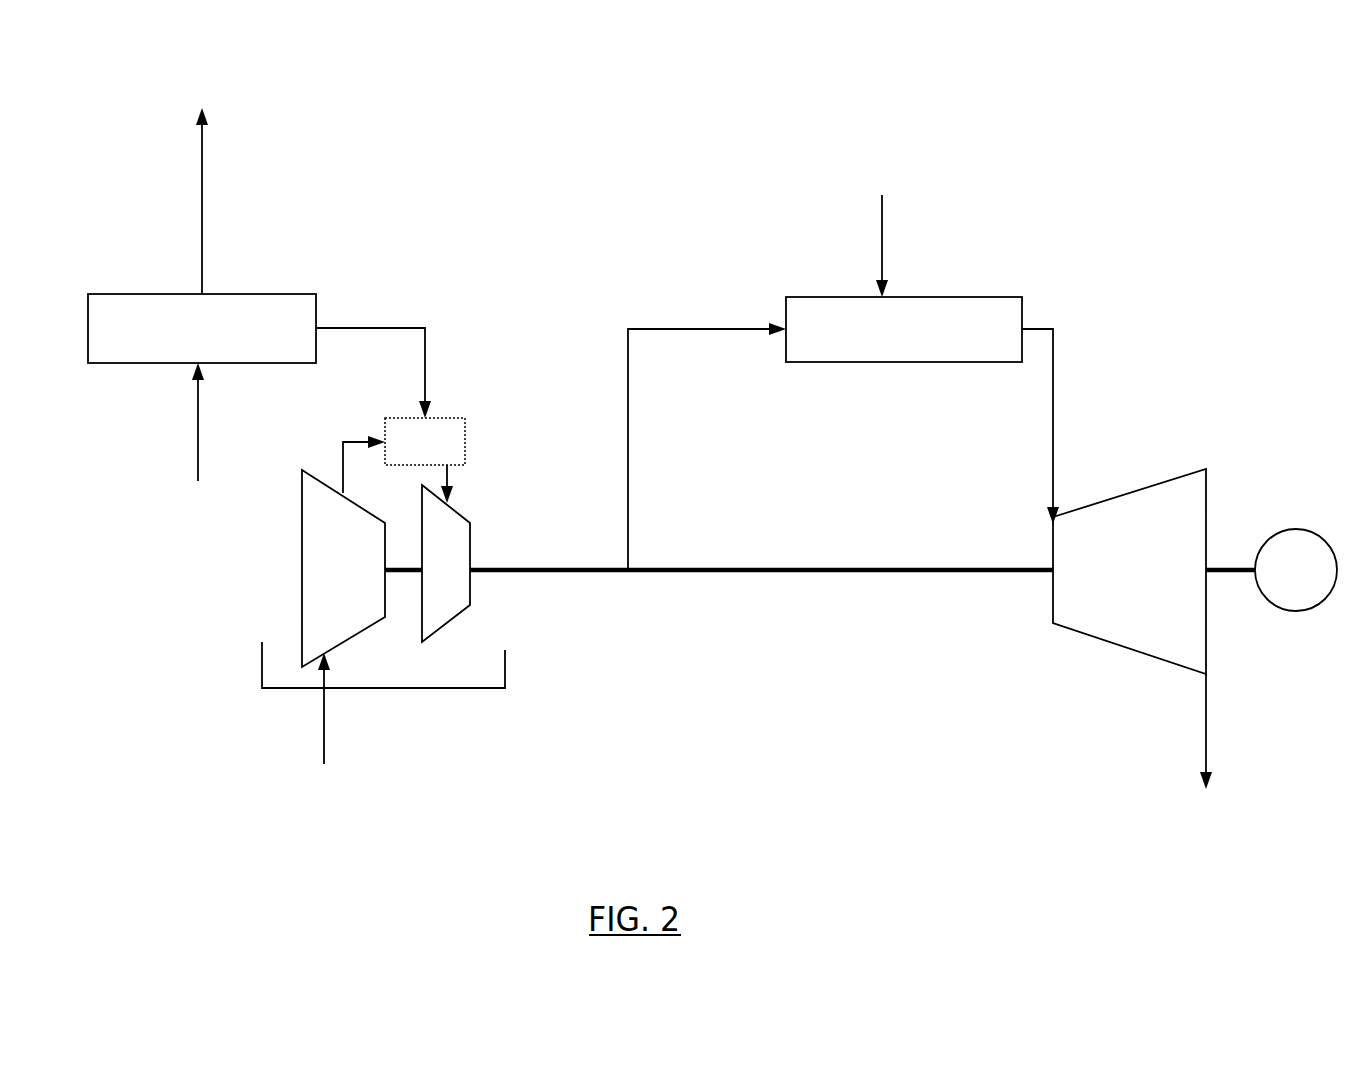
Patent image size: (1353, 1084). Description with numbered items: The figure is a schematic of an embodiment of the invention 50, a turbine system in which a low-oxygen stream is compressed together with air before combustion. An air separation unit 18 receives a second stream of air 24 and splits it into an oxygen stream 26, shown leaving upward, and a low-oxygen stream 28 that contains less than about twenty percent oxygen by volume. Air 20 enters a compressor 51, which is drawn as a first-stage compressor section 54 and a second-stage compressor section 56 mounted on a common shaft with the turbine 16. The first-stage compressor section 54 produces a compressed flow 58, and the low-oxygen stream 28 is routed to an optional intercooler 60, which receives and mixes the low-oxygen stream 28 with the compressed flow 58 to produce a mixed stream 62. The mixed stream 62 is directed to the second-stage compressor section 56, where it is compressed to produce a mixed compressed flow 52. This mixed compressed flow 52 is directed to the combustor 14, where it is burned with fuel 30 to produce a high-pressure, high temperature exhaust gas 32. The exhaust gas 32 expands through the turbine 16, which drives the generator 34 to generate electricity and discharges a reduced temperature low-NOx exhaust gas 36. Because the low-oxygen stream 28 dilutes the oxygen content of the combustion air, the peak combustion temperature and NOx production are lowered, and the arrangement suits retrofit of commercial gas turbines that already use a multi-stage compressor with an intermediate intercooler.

The combustor 14 is at (886, 352).
The turbine 16 is at (1117, 577).
The air separation unit 18 is at (186, 352).
The air 20 is at (324, 733).
The second stream of air 24 is at (198, 445).
The oxygen stream 26 is at (215, 180).
The low-oxygen stream 28 is at (373, 352).
The fuel 30 is at (881, 228).
The high temperature exhaust gas 32 is at (1061, 426).
The generator 34 is at (1294, 529).
The low-NOx exhaust gas 36 is at (1203, 756).
The embodiment of the invention 50 is at (393, 152).
The compressor 51 is at (391, 688).
The mixed compressed flow 52 is at (707, 429).
The first-stage compressor section 54 is at (320, 584).
The second-stage compressor section 56 is at (432, 573).
The compressed flow 58 is at (343, 442).
The intercooler 60 is at (409, 459).
The mixed stream 62 is at (453, 487).